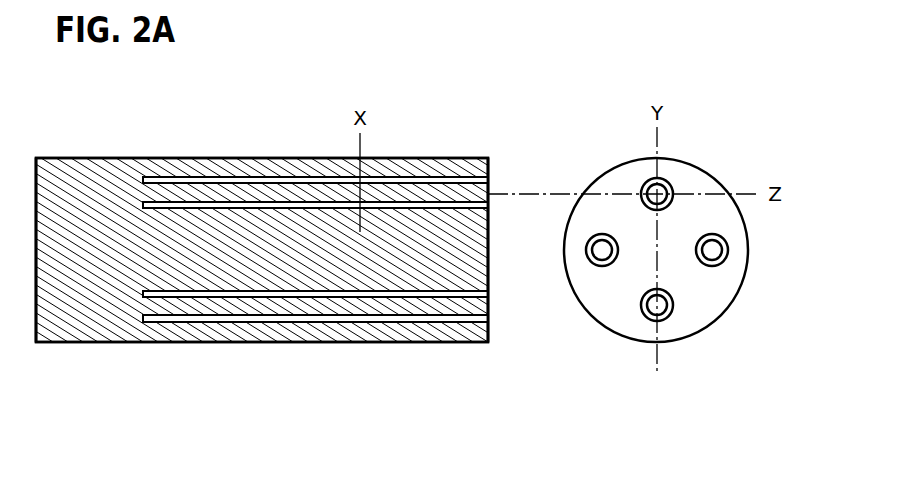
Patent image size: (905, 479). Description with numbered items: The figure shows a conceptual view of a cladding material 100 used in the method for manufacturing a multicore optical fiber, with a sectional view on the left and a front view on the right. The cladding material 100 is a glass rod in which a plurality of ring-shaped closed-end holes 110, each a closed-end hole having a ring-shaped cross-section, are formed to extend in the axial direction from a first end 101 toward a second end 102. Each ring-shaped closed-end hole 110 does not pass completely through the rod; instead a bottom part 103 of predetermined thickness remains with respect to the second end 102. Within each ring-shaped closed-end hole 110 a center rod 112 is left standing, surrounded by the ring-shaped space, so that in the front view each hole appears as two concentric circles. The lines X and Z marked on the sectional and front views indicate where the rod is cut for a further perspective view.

The cladding material 100 is at (210, 165).
The first end 101 is at (489, 172).
The second end 102 is at (36, 180).
The bottom part 103 is at (150, 322).
The ring-shaped closed-end hole 110 is at (430, 181).
The center rod 112 is at (488, 197).